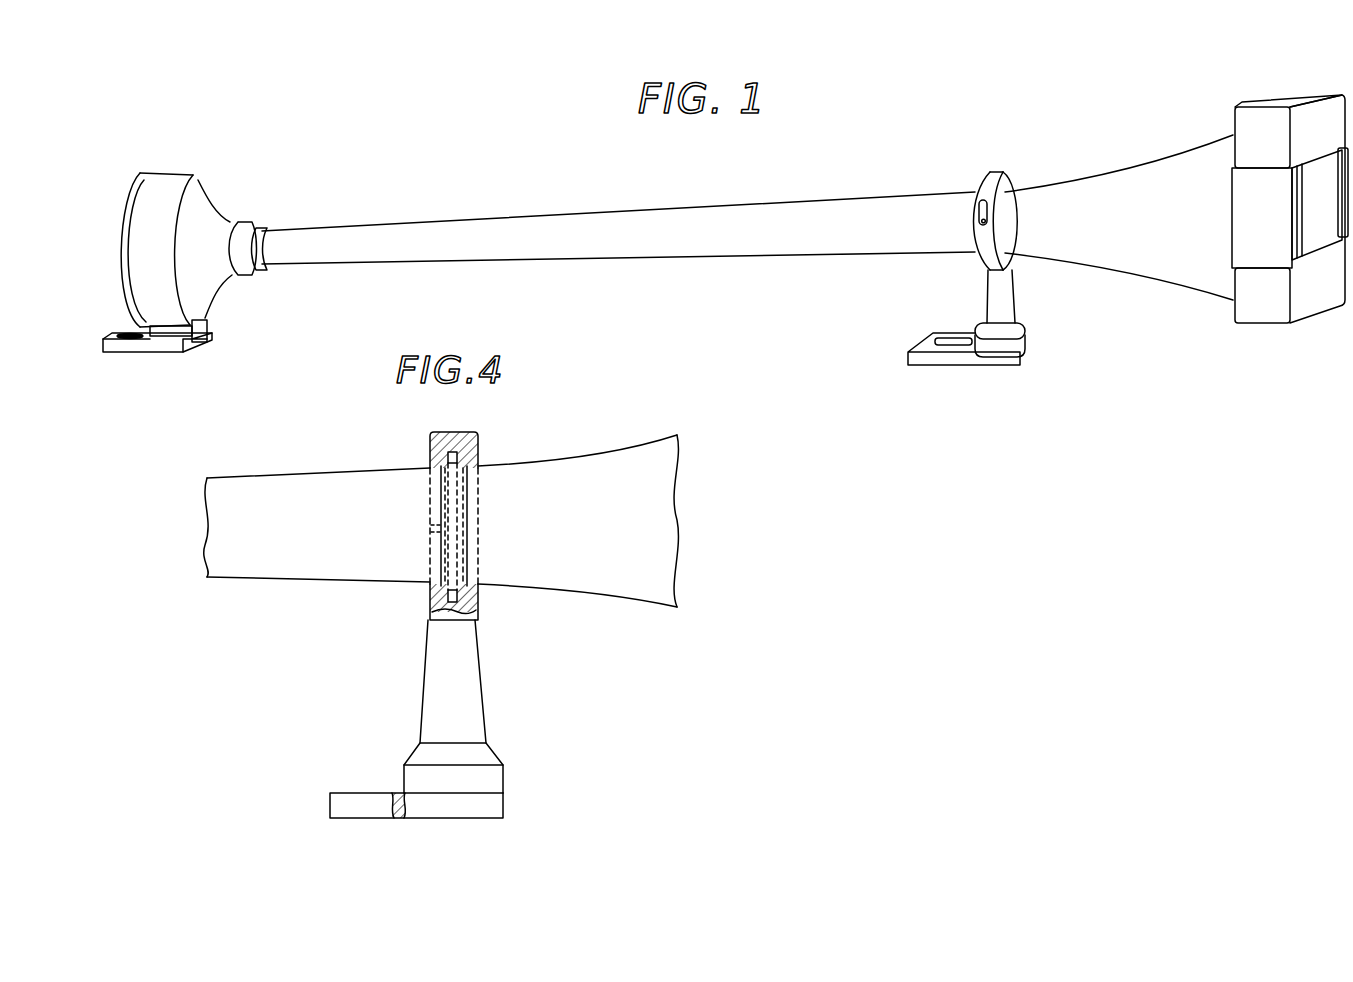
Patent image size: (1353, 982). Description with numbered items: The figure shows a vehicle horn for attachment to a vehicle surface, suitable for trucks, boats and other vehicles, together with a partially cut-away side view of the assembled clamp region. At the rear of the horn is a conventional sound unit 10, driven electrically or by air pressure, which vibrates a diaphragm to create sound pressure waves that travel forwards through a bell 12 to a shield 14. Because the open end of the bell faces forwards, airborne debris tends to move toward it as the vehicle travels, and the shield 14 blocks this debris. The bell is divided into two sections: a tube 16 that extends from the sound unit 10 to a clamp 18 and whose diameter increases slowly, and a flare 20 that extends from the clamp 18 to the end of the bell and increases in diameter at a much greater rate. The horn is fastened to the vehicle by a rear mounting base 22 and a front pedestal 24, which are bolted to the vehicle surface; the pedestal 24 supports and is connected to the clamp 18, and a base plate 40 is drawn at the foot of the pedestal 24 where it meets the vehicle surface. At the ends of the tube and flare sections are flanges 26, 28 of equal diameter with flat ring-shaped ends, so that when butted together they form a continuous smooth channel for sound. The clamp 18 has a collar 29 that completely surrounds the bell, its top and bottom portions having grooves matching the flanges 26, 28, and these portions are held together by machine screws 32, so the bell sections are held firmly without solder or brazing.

In FIG. 1, the sound unit 10 is at (207, 207).
In FIG. 1, the bell 12 is at (747, 208).
In FIG. 1, the shield 14 is at (1290, 100).
In FIG. 1, the tube 16 is at (778, 205).
In FIG. 4, the tube 16 is at (333, 472).
In FIG. 1, the clamp 18 is at (953, 216).
In FIG. 4, the clamp 18 is at (660, 607).
In FIG. 1, the flare 20 is at (1153, 160).
In FIG. 1, the rear mounting base 22 is at (210, 333).
In FIG. 1, the front pedestal 24 is at (1018, 305).
In FIG. 4, the front pedestal 24 is at (487, 702).
In FIG. 4, the flange 26 is at (430, 600).
In FIG. 4, the flange 28 is at (465, 482).
In FIG. 4, the collar 29 is at (425, 443).
In FIG. 1, the machine screws 32 is at (982, 222).
In FIG. 1, the mounting base 40 is at (953, 360).
In FIG. 4, the mounting base 40 is at (343, 808).